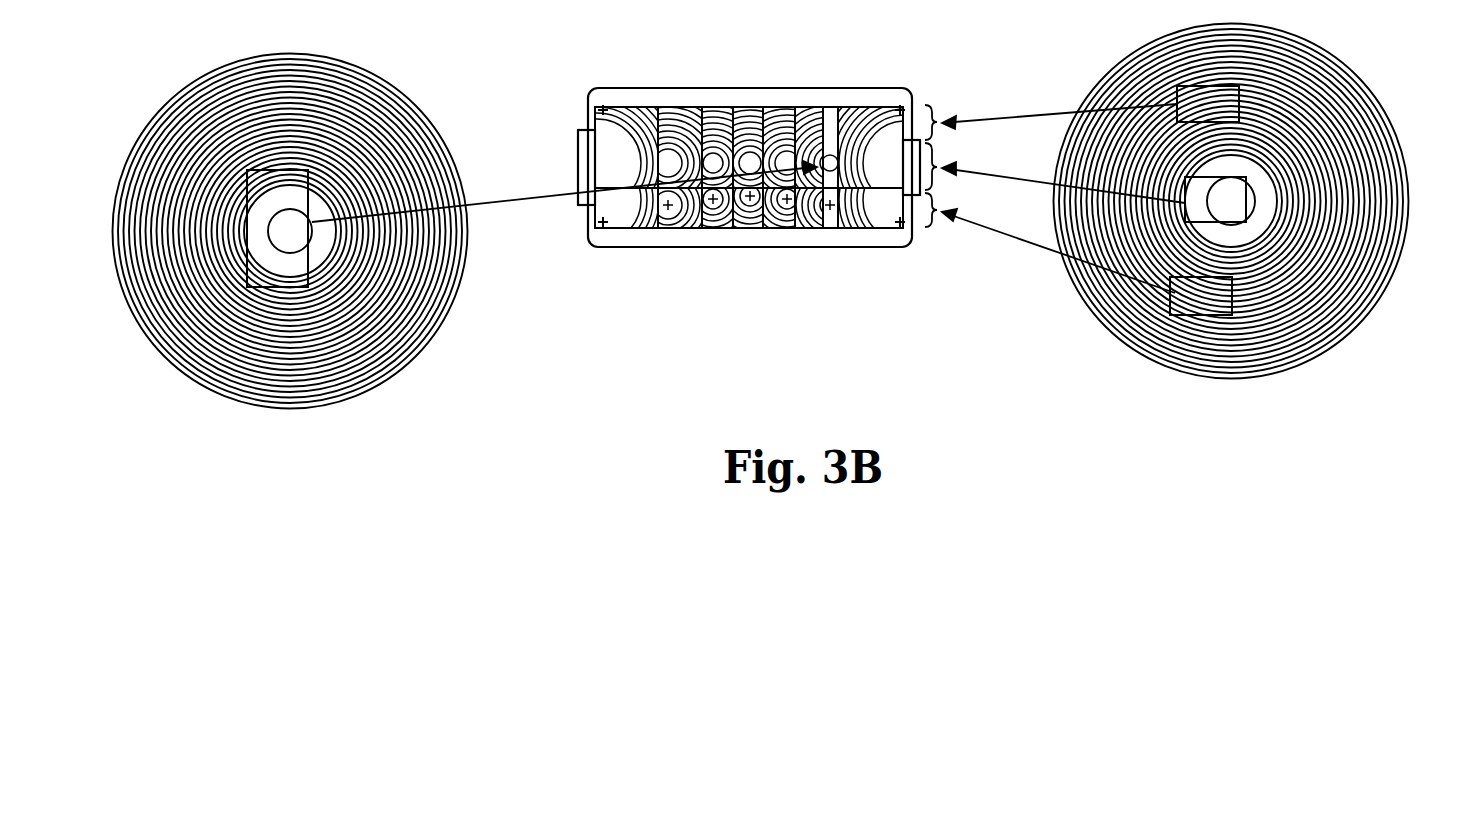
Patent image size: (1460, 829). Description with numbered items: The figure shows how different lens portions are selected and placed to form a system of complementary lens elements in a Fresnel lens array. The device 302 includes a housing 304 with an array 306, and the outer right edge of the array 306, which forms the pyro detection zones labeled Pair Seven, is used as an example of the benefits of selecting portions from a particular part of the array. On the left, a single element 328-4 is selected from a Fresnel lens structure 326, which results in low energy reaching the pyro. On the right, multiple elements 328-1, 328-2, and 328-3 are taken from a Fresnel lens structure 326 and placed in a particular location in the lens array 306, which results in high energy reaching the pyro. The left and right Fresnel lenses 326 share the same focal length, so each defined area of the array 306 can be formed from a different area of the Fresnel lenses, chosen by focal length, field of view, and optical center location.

The device 302 is at (665, 257).
The housing 304 is at (658, 88).
The array 306 is at (740, 212).
The Fresnel lens structure 326 is at (465, 283).
The element 328-1 is at (1240, 107).
The element 328-2 is at (1248, 200).
The element 328-3 is at (1232, 293).
The single element 328-4 is at (245, 252).